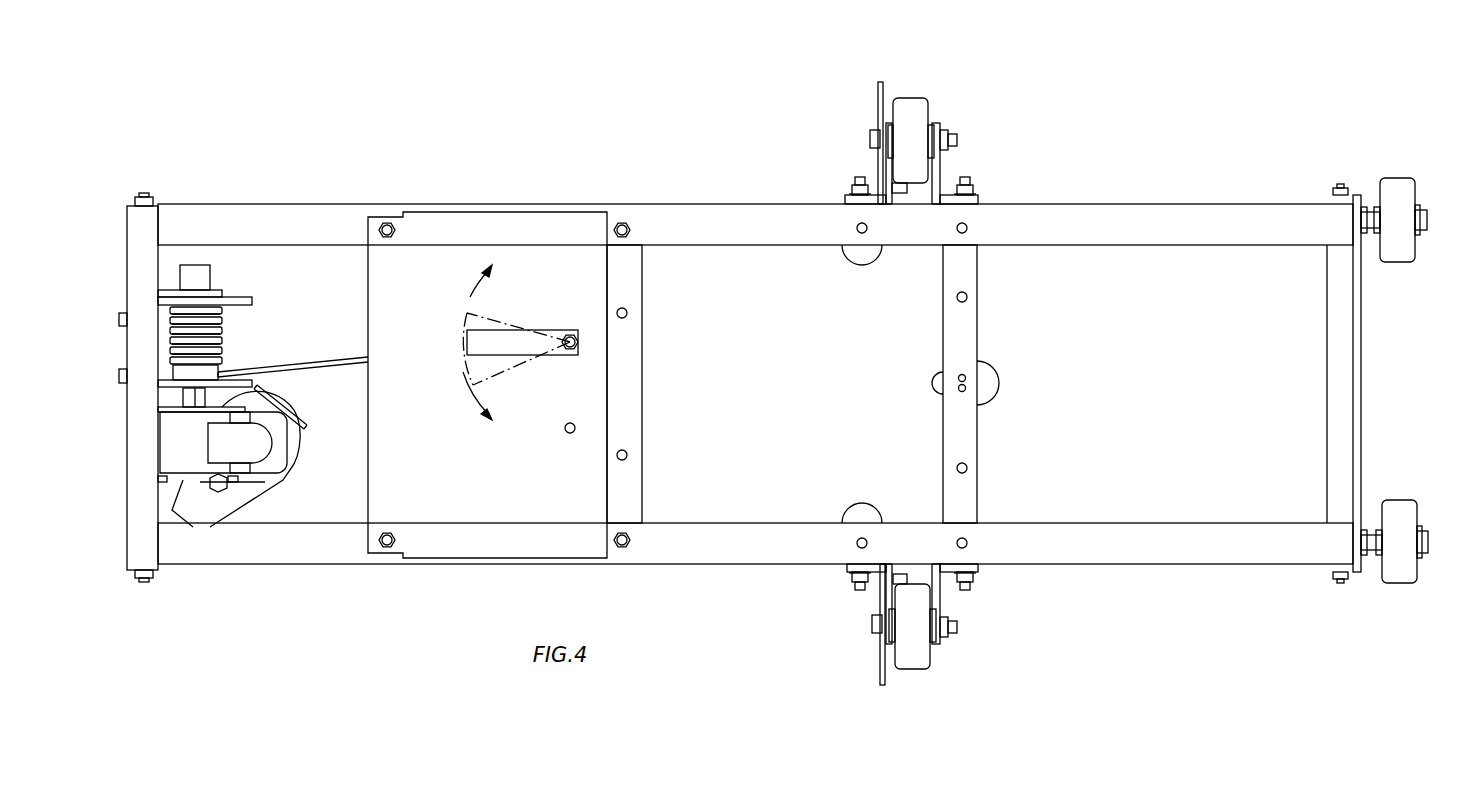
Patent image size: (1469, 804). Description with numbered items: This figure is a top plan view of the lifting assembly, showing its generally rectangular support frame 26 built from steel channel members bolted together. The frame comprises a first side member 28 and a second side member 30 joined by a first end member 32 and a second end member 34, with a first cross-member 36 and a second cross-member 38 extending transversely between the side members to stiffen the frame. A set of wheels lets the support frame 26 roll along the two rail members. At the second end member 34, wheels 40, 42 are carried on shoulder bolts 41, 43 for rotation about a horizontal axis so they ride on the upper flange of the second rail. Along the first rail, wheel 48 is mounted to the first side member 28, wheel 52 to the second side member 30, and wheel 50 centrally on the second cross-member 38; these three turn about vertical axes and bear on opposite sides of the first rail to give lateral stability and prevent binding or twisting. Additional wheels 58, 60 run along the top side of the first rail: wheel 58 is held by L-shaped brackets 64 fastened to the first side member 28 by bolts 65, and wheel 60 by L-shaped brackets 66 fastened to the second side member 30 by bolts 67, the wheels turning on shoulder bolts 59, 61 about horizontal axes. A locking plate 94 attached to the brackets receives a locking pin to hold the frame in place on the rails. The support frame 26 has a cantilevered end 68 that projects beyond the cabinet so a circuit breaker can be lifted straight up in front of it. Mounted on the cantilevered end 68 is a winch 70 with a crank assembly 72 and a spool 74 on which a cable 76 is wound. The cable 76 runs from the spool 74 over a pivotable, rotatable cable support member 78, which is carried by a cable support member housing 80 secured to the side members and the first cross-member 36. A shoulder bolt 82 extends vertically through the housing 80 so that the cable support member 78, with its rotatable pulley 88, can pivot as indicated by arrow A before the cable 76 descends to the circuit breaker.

The support frame 26 is at (1180, 173).
The first side member 28 is at (1053, 210).
The second side member 30 is at (1147, 545).
The first end member 32 is at (135, 533).
The second end member 34 is at (1363, 350).
The first cross-member 36 is at (628, 392).
The second cross-member 38 is at (977, 488).
The wheel 40 is at (1393, 183).
The shoulder bolt 41 is at (1427, 210).
The wheel 42 is at (1393, 508).
The shoulder bolt 43 is at (1427, 553).
The wheel 48 is at (858, 253).
The wheel 50 is at (990, 385).
The wheel 52 is at (862, 512).
The wheel 58 is at (907, 110).
The shoulder bolt 59 is at (870, 137).
The wheel 60 is at (917, 662).
The shoulder bolt 61 is at (872, 625).
The L-shaped brackets 64 is at (885, 175).
The bolts 65 is at (848, 188).
The L-shaped brackets 66 is at (887, 592).
The bolts 67 is at (850, 576).
The cantilevered end 68 is at (248, 186).
The winch 70 is at (308, 521).
The crank assembly 72 is at (260, 503).
The spool 74 is at (210, 372).
The cable 76 is at (345, 355).
The cable support member 78 is at (522, 415).
The cable support member housing 80 is at (480, 227).
The shoulder bolt 82 is at (567, 333).
The pulley 88 is at (505, 338).
The locking plate 94 is at (876, 82).